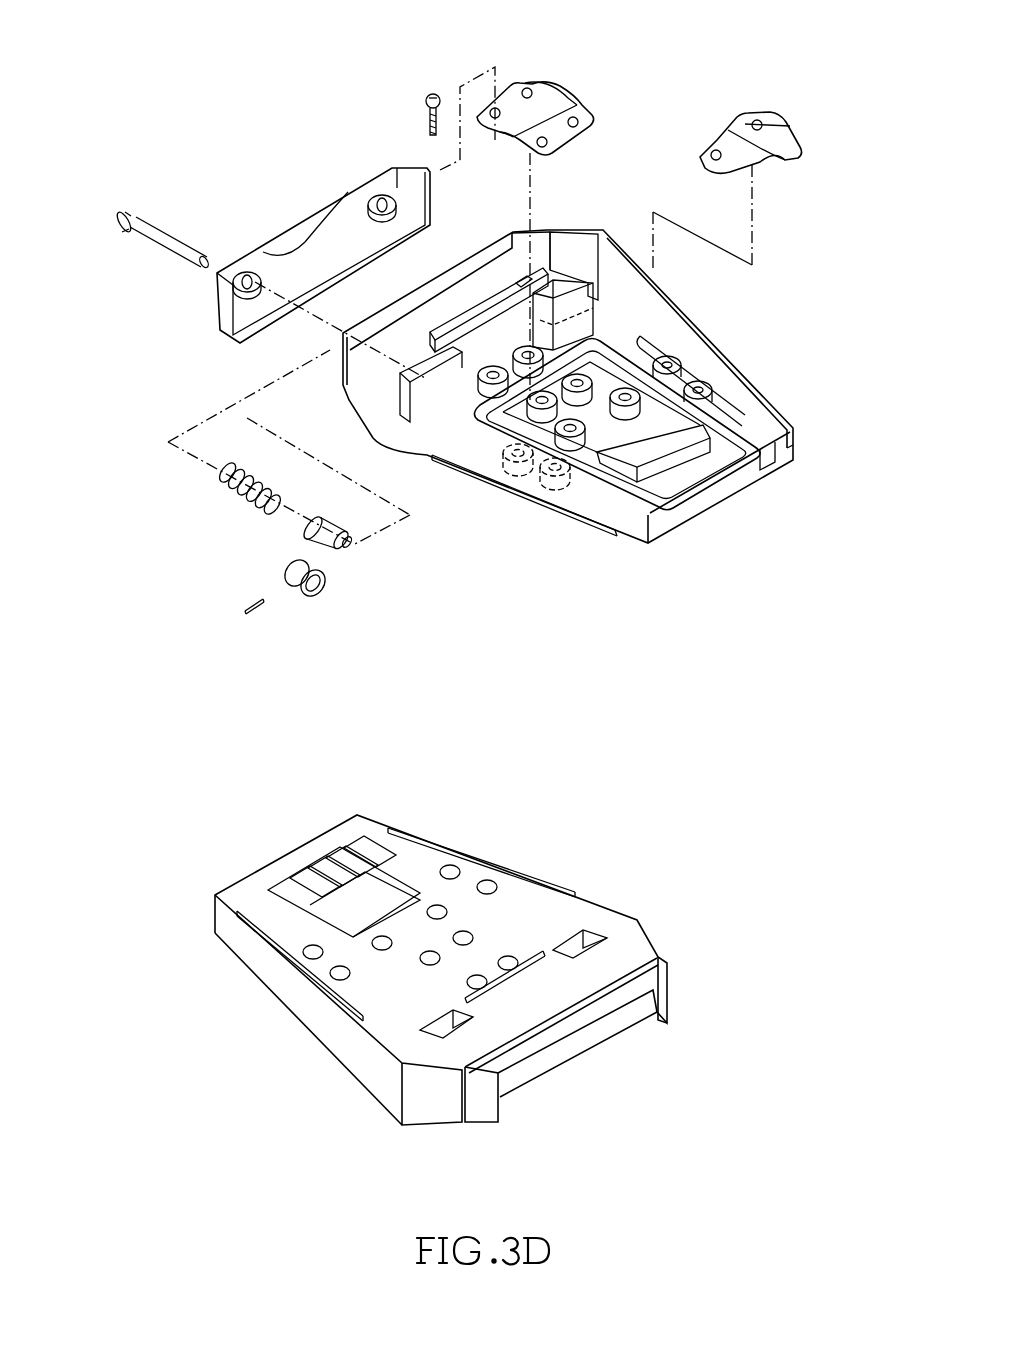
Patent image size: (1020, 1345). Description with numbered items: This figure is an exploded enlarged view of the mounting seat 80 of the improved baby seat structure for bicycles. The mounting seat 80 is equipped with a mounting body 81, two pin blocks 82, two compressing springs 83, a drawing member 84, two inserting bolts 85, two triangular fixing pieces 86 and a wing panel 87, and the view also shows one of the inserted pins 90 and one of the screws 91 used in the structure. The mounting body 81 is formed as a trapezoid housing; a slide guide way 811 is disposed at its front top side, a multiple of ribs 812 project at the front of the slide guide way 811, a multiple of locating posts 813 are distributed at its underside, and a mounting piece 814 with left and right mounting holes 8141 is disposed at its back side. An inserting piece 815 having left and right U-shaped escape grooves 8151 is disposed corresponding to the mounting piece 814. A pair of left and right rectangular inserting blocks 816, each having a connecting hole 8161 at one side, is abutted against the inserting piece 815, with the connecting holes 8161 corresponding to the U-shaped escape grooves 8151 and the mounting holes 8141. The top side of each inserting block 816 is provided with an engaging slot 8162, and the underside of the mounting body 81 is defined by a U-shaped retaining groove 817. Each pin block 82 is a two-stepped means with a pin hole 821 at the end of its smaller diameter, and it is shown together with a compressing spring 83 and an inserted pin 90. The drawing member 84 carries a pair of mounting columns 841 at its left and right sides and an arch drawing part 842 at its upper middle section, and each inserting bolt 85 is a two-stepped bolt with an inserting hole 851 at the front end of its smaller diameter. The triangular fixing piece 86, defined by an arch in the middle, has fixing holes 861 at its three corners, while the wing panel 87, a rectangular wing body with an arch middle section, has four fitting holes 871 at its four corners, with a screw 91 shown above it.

The mounting seat 80 is at (189, 641).
The mounting body 81 is at (613, 553).
The slide guide way 811 is at (392, 868).
The ribs 812 is at (290, 893).
The locating posts 813 is at (710, 390).
The mounting piece 814 is at (420, 317).
The mounting holes 8141 is at (518, 273).
The inserting piece 815 is at (577, 257).
The U-shaped escape grooves 8151 is at (385, 360).
The rectangular inserting blocks 816 is at (586, 280).
The connecting holes 8161 is at (430, 380).
The engaging slot 8162 is at (607, 948).
The U-shaped retaining groove 817 is at (772, 462).
The pin block 82 is at (350, 557).
The pin hole 821 is at (294, 582).
The compressing spring 83 is at (247, 511).
The drawing member 84 is at (209, 326).
The mounting columns 841 is at (373, 193).
The arch drawing part 842 is at (300, 233).
The inserting bolt 85 is at (126, 245).
The inserting hole 851 is at (200, 264).
The triangular fixing piece 86 is at (773, 172).
The fixing holes 861 is at (758, 120).
The wing panel 87 is at (596, 109).
The fitting holes 871 is at (529, 89).
The inserted pin 90 is at (260, 619).
The screw 91 is at (418, 104).